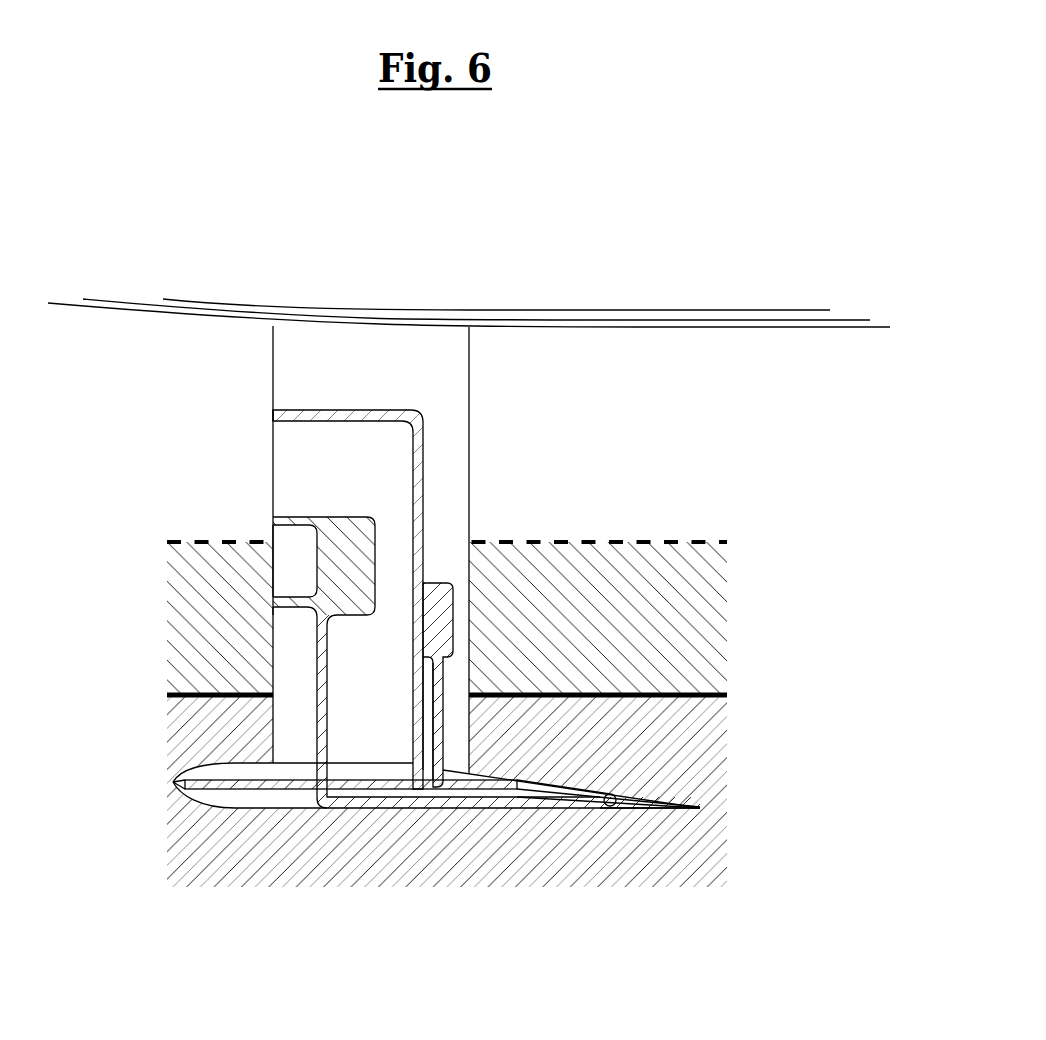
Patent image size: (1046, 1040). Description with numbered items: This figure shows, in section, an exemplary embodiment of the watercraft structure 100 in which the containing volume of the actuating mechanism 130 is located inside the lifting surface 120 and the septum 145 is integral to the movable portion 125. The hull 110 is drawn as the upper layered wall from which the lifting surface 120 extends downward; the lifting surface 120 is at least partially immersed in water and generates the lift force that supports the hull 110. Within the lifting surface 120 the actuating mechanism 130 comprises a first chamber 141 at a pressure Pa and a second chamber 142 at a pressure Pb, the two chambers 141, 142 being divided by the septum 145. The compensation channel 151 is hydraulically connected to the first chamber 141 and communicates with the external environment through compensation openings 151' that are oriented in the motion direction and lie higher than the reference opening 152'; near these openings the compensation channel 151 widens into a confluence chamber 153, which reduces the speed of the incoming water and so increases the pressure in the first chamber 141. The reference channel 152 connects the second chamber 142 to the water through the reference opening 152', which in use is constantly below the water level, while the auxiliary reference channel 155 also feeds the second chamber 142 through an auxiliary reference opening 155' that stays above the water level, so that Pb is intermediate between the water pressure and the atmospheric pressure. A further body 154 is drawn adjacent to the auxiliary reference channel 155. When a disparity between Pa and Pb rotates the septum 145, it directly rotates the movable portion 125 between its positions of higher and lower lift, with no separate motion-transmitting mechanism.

The watercraft structure 100 is at (642, 216).
The hull 110 is at (737, 327).
The lifting surface 120 is at (378, 854).
The movable portion 125 is at (632, 810).
The actuating mechanism 130 is at (510, 723).
The first chamber 141 is at (538, 782).
The second chamber 142 is at (538, 790).
The septum 145 is at (603, 795).
The compensation channel 151 is at (388, 711).
The compensation opening 151' is at (201, 548).
The reference channel 152 is at (335, 858).
The reference opening 152' is at (136, 849).
The confluence chamber 153 is at (355, 537).
The second block 154 is at (428, 620).
The auxiliary reference channel 155 is at (348, 504).
The auxiliary reference opening 155' is at (199, 378).